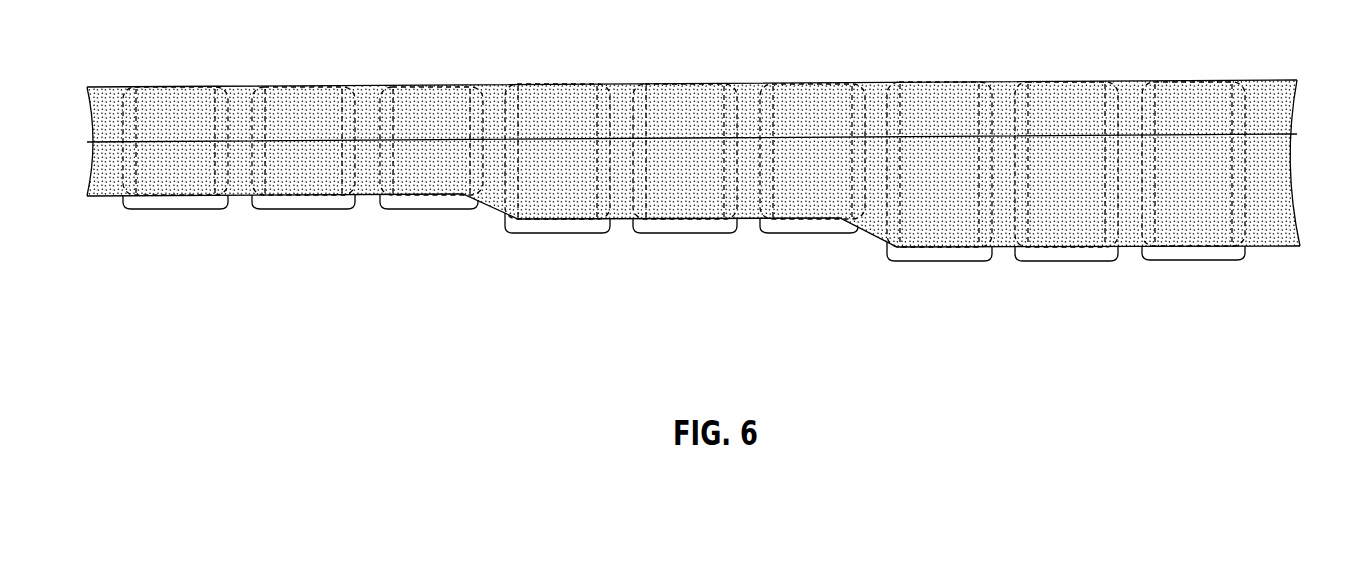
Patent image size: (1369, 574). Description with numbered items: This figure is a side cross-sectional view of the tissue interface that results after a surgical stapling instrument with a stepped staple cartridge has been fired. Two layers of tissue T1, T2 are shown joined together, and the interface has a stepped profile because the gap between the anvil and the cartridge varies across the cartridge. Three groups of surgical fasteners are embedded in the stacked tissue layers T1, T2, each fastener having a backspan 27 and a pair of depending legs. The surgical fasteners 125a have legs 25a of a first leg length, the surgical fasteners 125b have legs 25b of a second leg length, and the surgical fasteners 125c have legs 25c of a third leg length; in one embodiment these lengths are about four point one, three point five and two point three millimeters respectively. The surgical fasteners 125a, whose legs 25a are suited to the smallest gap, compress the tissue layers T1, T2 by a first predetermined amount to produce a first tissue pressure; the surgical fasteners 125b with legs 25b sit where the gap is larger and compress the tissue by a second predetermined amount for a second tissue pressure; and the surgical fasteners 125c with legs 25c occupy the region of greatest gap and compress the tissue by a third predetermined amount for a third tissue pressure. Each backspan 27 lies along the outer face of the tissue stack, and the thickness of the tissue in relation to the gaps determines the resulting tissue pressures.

The legs 25a is at (227, 88).
The legs 25b is at (607, 88).
The legs 25c is at (983, 88).
The backspan 27 is at (208, 208).
The surgical fasteners 125a is at (158, 216).
The surgical fasteners 125b is at (542, 254).
The surgical fasteners 125c is at (918, 281).
The tissue layer T1 is at (1275, 105).
The tissue layer T2 is at (1285, 200).